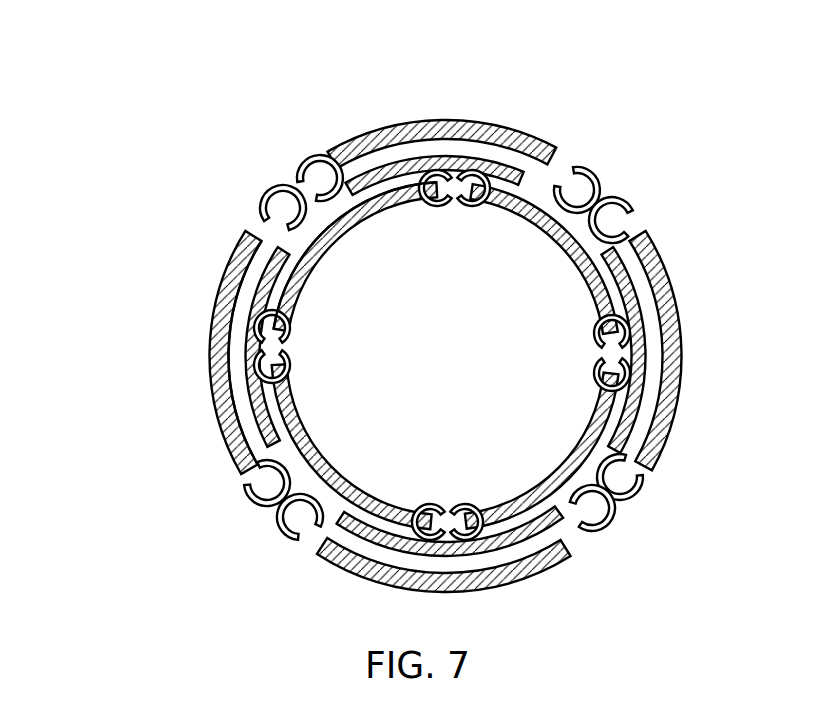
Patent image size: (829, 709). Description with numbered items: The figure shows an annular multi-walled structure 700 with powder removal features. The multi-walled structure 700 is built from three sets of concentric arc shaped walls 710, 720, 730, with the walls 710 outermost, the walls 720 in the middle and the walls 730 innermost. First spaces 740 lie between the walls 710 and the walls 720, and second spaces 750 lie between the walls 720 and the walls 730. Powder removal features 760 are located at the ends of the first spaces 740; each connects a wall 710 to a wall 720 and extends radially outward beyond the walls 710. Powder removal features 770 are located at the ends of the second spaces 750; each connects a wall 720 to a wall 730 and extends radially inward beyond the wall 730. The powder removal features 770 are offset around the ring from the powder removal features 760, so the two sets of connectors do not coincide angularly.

The multi-walled structure 700 is at (100, 135).
The walls 710 is at (240, 233).
The walls 720 is at (262, 290).
The walls 730 is at (300, 280).
The first spaces 740 is at (233, 327).
The second spaces 750 is at (320, 228).
The powder removal features 760 is at (250, 497).
The powder removal features 770 is at (292, 368).